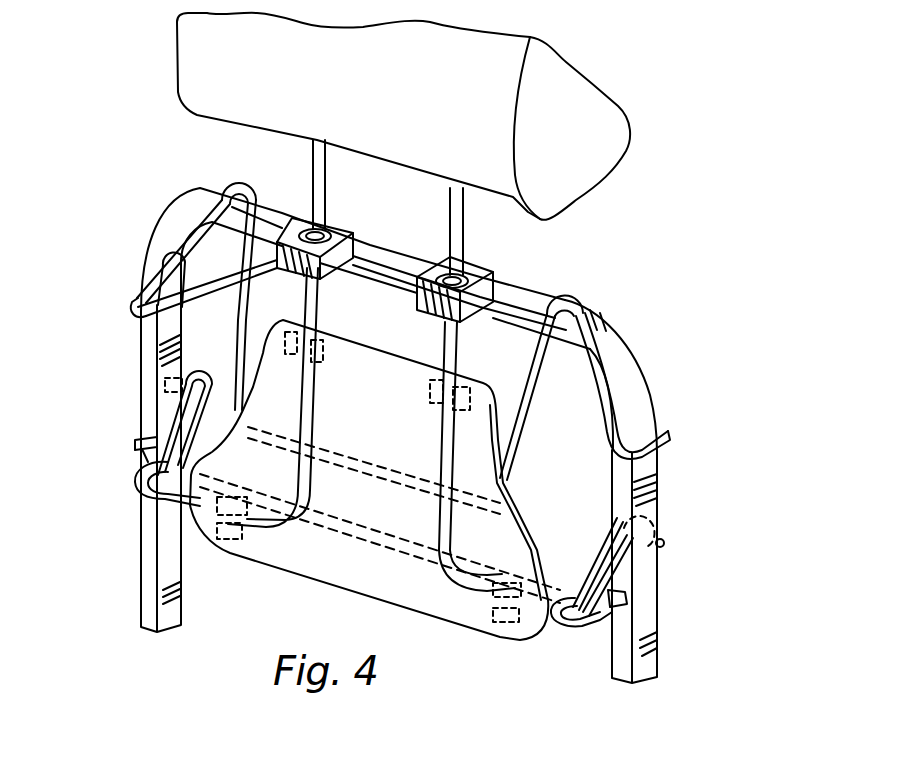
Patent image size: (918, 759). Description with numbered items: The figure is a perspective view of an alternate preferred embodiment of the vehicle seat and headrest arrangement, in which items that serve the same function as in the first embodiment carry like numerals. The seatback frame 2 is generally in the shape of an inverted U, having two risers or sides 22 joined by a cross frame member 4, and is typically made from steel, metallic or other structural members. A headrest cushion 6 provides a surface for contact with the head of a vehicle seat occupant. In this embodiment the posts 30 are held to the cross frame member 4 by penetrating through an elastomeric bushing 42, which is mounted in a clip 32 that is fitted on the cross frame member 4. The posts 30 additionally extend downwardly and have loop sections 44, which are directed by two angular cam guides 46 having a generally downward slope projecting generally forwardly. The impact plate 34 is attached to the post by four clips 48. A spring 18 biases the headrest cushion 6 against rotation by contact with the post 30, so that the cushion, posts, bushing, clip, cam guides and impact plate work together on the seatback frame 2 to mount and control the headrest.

The seatback frame 2 is at (664, 469).
The cross frame member 4 is at (278, 200).
The headrest cushion 6 is at (558, 78).
The spring 18 is at (517, 444).
The risers or sides 22 is at (147, 517).
The posts 30 is at (443, 193).
The clip 32 is at (318, 273).
The impact plate 34 is at (310, 570).
The elastomeric bushing 42 is at (440, 268).
The loop sections 44 is at (150, 480).
The angular cam guides 46 is at (192, 448).
The clips 48 is at (277, 330).